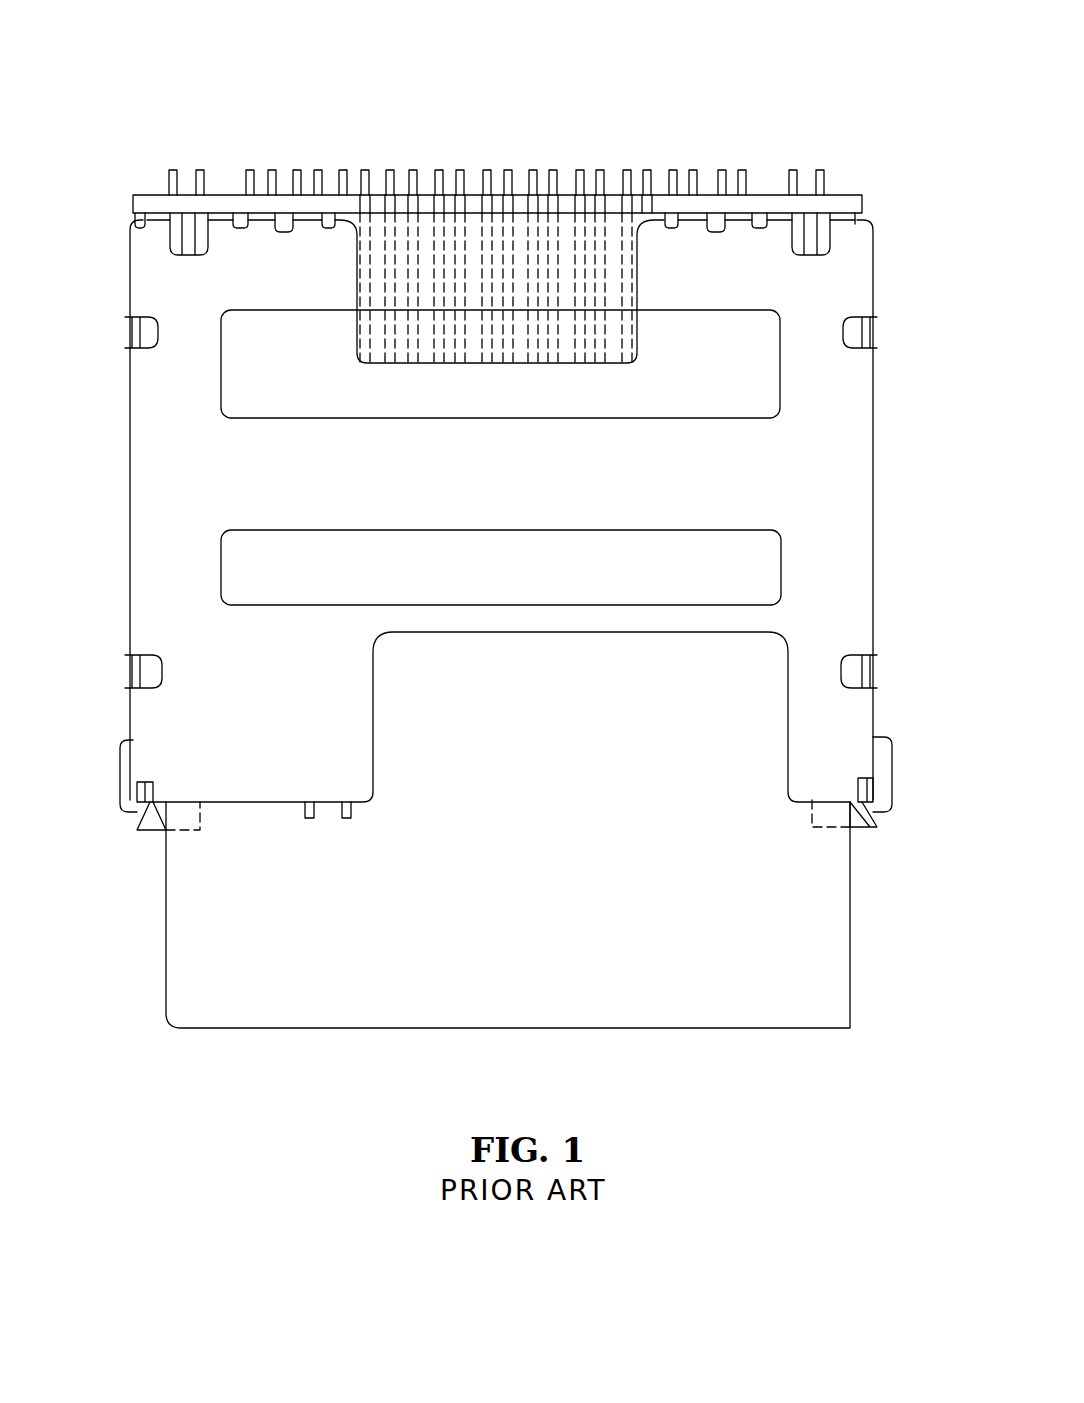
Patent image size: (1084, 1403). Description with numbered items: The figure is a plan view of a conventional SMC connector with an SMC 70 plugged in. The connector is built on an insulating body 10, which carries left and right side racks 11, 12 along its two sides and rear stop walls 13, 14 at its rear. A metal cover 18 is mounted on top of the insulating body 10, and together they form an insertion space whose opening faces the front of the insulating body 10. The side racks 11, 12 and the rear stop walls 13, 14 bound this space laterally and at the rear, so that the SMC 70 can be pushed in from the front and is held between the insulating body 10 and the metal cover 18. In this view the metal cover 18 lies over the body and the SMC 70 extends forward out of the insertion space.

The insulating body 10 is at (898, 123).
The left side rack 11 is at (125, 832).
The right side rack 12 is at (880, 817).
The rear stop wall 13 is at (228, 210).
The rear stop wall 14 is at (765, 205).
The metal cover 18 is at (150, 465).
The SMC 70 is at (395, 1030).